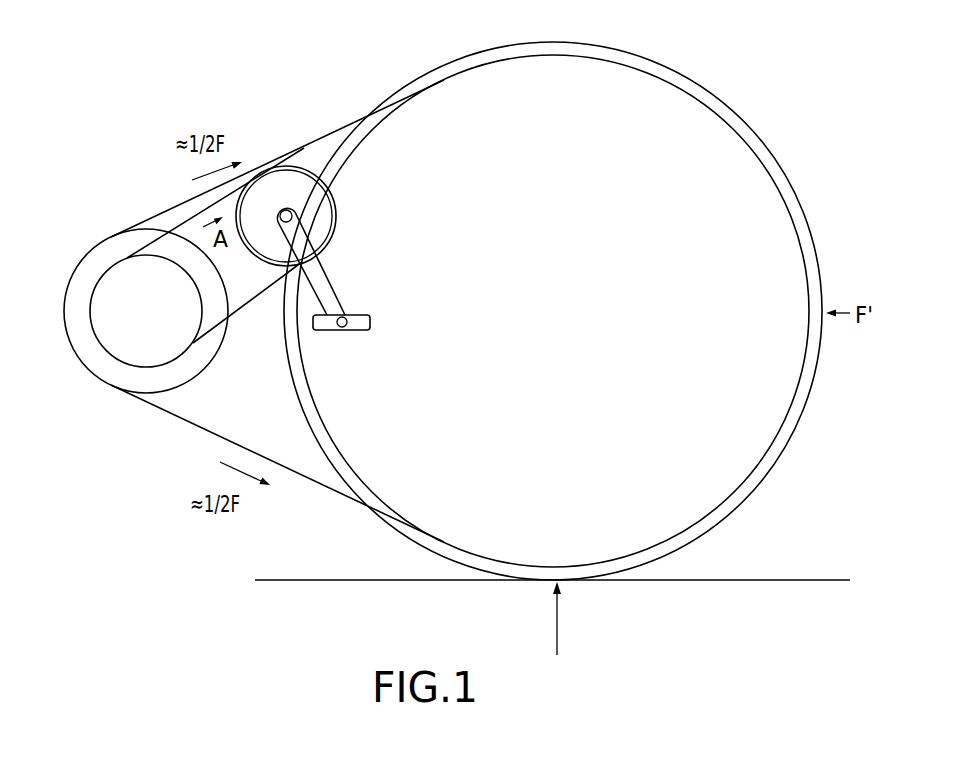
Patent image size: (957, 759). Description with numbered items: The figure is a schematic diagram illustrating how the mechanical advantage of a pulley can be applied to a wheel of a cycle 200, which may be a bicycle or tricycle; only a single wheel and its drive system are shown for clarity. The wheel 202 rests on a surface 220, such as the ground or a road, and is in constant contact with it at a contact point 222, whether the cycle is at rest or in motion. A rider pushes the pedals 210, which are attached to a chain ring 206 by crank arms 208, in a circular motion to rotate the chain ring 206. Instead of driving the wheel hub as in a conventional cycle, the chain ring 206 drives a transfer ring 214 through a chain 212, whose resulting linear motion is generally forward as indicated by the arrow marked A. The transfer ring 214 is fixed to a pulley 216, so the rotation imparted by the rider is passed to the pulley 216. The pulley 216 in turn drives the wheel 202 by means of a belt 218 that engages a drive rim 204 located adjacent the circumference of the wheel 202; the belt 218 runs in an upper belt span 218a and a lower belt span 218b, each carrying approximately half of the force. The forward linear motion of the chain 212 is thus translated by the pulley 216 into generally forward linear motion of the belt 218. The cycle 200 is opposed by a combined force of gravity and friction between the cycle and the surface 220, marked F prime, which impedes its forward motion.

The cycle 200 is at (82, 180).
The wheel 202 is at (813, 247).
The drive rim 204 is at (792, 218).
The chain ring 206 is at (338, 206).
The crank arms 208 is at (323, 270).
The pedals 210 is at (363, 313).
The chain 212 is at (242, 313).
The transfer ring 214 is at (90, 317).
The pulley 216 is at (83, 260).
The belt 218 is at (163, 211).
The upper belt span 218a is at (298, 148).
The lower belt span 218b is at (305, 478).
The surface 220 is at (702, 583).
The contact point 222 is at (575, 629).